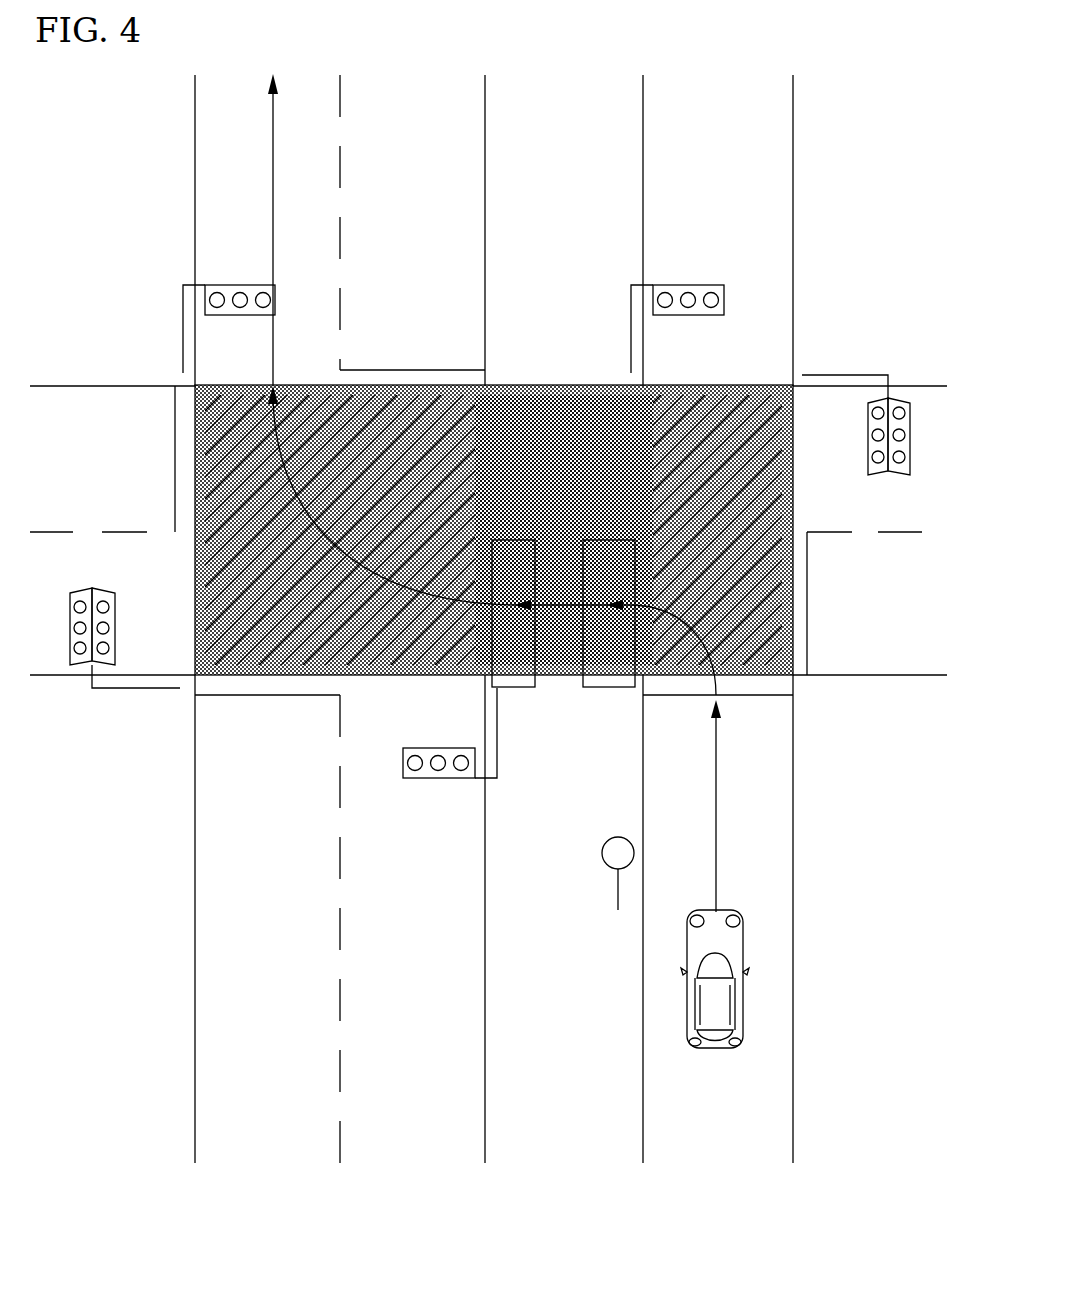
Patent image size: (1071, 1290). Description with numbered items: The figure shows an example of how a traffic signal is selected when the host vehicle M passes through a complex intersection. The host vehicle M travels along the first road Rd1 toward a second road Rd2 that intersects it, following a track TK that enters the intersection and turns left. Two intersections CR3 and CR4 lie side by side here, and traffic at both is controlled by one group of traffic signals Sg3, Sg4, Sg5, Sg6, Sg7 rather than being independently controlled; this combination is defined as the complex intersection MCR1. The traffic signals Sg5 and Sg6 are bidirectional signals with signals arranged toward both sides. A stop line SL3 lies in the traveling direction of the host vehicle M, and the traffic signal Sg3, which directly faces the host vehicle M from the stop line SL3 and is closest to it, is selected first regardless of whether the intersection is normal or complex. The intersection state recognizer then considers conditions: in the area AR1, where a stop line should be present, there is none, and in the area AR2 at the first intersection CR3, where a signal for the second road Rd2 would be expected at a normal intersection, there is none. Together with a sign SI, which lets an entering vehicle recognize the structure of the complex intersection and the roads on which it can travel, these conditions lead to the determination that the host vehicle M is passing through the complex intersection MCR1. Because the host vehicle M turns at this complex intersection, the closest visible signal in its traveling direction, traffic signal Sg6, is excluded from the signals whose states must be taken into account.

The traffic signal Sg3 is at (688, 285).
The traffic signal Sg4 is at (240, 285).
The traffic signal Sg5 is at (868, 458).
The traffic signal Sg6 is at (83, 592).
The traffic signal Sg7 is at (438, 778).
The first intersection CR3 is at (742, 472).
The intersection CR4 is at (390, 472).
The complex intersection MCR1 is at (594, 524).
The area AR1 is at (513, 690).
The area AR2 is at (607, 690).
The stop line SL3 is at (765, 697).
The track TK is at (718, 820).
The sign SI is at (584, 878).
The host vehicle M is at (715, 1050).
The first road Rd1 is at (694, 1167).
The second road Rd2 is at (897, 585).